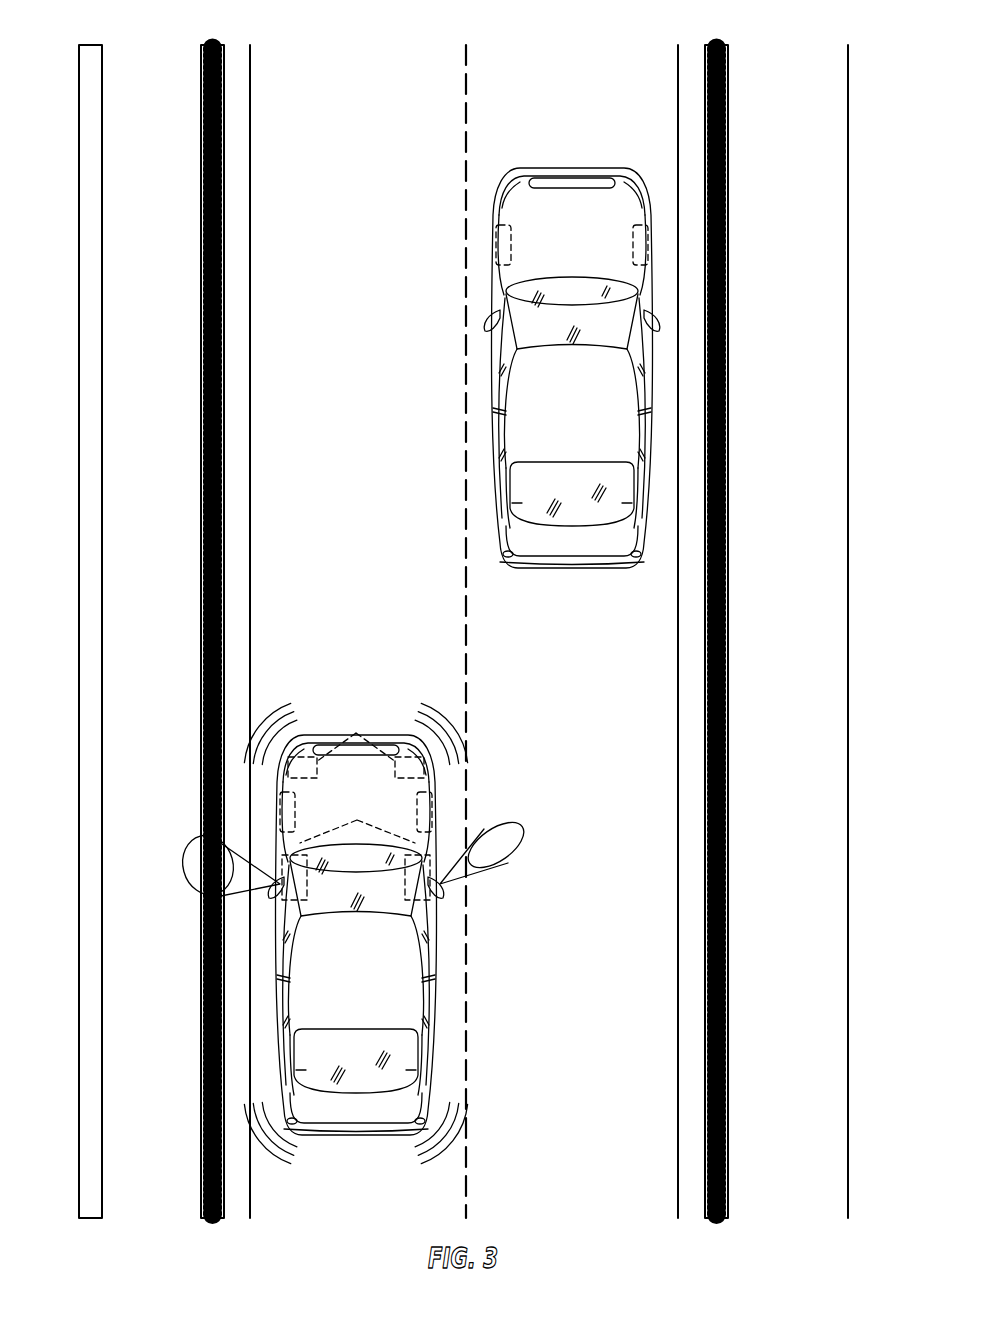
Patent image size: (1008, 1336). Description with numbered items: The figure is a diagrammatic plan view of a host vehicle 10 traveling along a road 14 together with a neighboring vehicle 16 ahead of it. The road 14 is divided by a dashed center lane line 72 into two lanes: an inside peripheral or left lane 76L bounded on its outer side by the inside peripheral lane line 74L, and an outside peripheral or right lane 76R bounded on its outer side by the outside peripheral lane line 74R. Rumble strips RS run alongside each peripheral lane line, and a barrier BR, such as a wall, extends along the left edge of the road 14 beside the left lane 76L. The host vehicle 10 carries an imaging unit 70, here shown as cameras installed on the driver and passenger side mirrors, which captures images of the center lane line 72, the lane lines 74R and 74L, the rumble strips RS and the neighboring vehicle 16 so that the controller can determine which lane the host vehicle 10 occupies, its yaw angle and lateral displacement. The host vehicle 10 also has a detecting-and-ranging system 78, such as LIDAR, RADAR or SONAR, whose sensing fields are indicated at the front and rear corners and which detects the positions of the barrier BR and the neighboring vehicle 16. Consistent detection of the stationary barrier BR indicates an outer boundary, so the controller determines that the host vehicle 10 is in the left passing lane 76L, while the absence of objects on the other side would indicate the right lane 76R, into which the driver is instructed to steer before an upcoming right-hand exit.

The host vehicle 10 is at (352, 1137).
The neighboring vehicle 16 is at (562, 168).
The road 14 is at (828, 657).
The center lane line 72 is at (466, 675).
The inside peripheral lane line 74L is at (251, 675).
The outside peripheral lane line 74R is at (677, 668).
The inside peripheral lane 76L is at (287, 560).
The outside peripheral lane 76R is at (637, 843).
The detecting-and-ranging system 78 is at (357, 733).
The imaging unit 70 is at (357, 817).
The rumble strip RS is at (210, 42).
The barrier BR is at (78, 903).